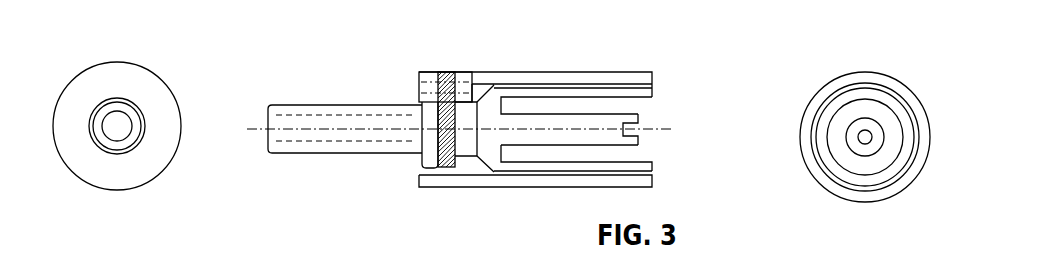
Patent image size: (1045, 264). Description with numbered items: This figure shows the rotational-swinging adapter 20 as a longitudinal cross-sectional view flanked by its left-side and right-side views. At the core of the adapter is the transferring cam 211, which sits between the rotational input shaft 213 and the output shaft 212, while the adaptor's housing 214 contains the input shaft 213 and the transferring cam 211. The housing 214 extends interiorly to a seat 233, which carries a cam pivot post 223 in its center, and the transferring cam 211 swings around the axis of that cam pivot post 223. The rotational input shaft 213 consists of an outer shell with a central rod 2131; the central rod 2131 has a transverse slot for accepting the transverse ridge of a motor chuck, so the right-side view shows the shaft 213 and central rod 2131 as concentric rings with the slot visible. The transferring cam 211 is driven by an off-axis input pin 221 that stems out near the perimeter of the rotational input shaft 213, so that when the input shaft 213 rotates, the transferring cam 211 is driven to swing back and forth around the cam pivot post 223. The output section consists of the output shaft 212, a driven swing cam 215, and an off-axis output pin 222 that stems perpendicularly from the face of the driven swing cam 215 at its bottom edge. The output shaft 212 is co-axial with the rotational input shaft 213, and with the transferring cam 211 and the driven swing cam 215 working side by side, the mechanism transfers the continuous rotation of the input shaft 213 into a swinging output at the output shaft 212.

The rotational-swinging adapter 20 is at (346, 178).
The transferring cam 211 is at (458, 86).
The output shaft 212 is at (125, 120).
The rotational input shaft 213 is at (653, 91).
The adaptor's housing 214 is at (566, 58).
The driven swing cam 215 is at (427, 162).
The off-axis input pin 221 is at (441, 170).
The off-axis output pin 222 is at (73, 90).
The cam pivot post 223 is at (420, 88).
The seat 233 is at (419, 98).
The central rod 2131 is at (618, 135).